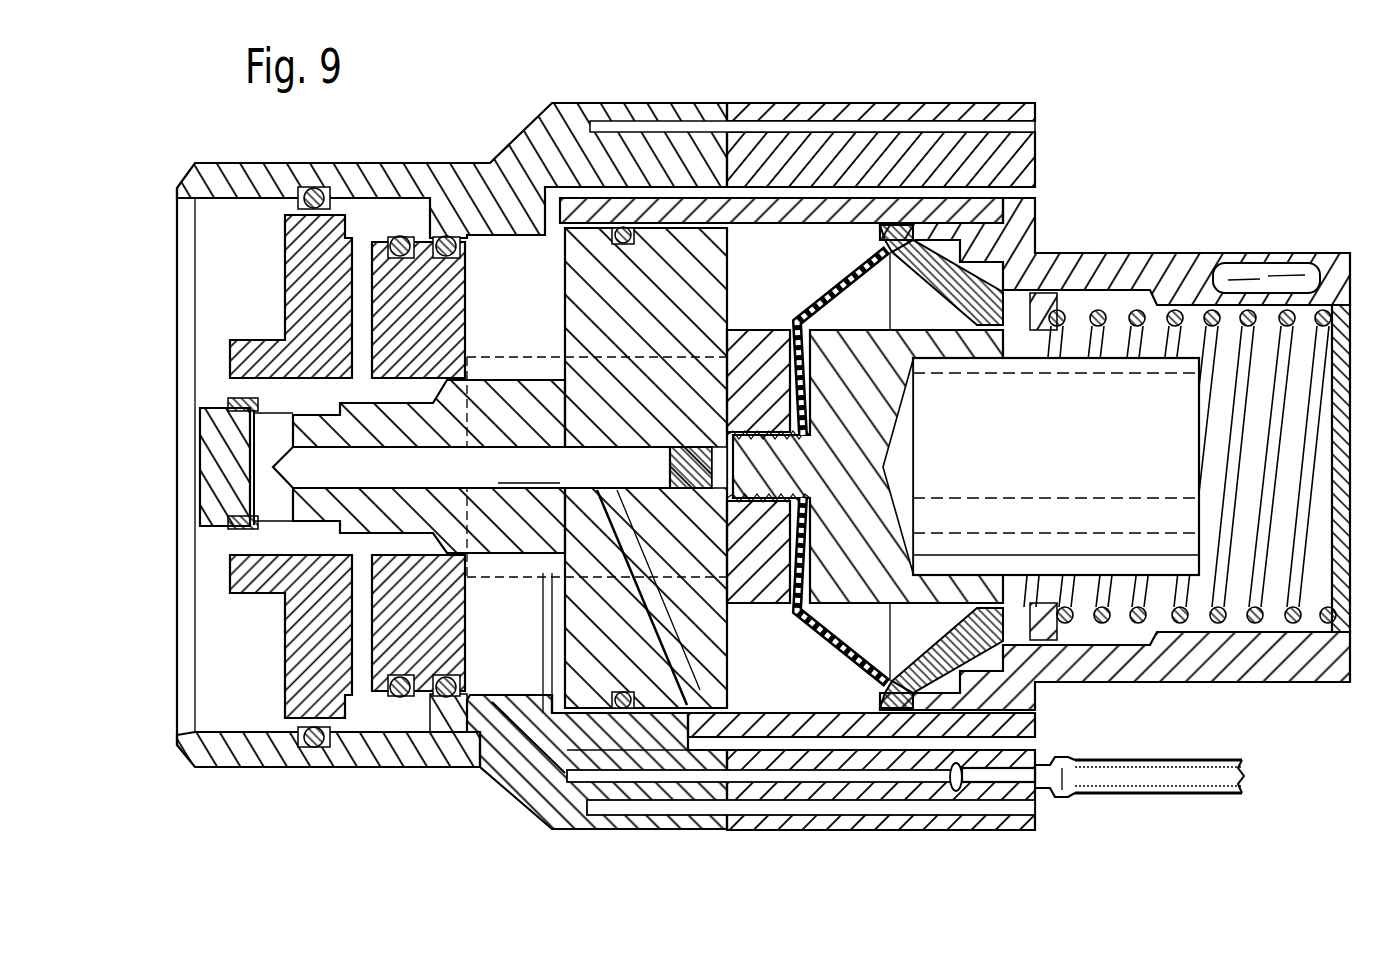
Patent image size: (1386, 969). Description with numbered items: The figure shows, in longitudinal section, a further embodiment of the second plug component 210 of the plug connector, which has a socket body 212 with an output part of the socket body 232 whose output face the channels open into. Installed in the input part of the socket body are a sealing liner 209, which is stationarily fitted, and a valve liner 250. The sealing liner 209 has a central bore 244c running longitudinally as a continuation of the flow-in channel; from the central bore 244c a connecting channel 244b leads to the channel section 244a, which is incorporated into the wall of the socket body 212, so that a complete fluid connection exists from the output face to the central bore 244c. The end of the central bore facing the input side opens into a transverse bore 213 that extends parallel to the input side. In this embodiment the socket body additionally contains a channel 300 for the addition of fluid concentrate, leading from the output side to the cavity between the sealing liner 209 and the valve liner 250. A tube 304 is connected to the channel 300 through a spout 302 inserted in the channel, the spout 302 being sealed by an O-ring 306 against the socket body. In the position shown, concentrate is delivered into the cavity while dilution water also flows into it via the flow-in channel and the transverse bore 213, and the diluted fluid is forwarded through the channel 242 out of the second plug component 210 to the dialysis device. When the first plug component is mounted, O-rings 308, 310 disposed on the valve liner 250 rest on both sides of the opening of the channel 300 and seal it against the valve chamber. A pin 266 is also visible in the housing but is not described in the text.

The sealing liner 209 is at (672, 660).
The second plug component 210 is at (413, 150).
The socket body 212 is at (713, 100).
The transverse bore 213 is at (270, 433).
The output part of the socket body 232 is at (947, 833).
The channel 242 is at (1000, 178).
The channel section 244a is at (838, 743).
The connecting channel 244b is at (700, 660).
The central bore 244c is at (500, 467).
The valve liner 250 is at (313, 615).
The pin 266 is at (1292, 272).
The channel 300 is at (540, 740).
The spout 302 is at (1060, 780).
The tube 304 is at (1188, 797).
The O-ring 306 is at (987, 833).
The O-ring 308 is at (395, 698).
The O-ring 310 is at (447, 696).